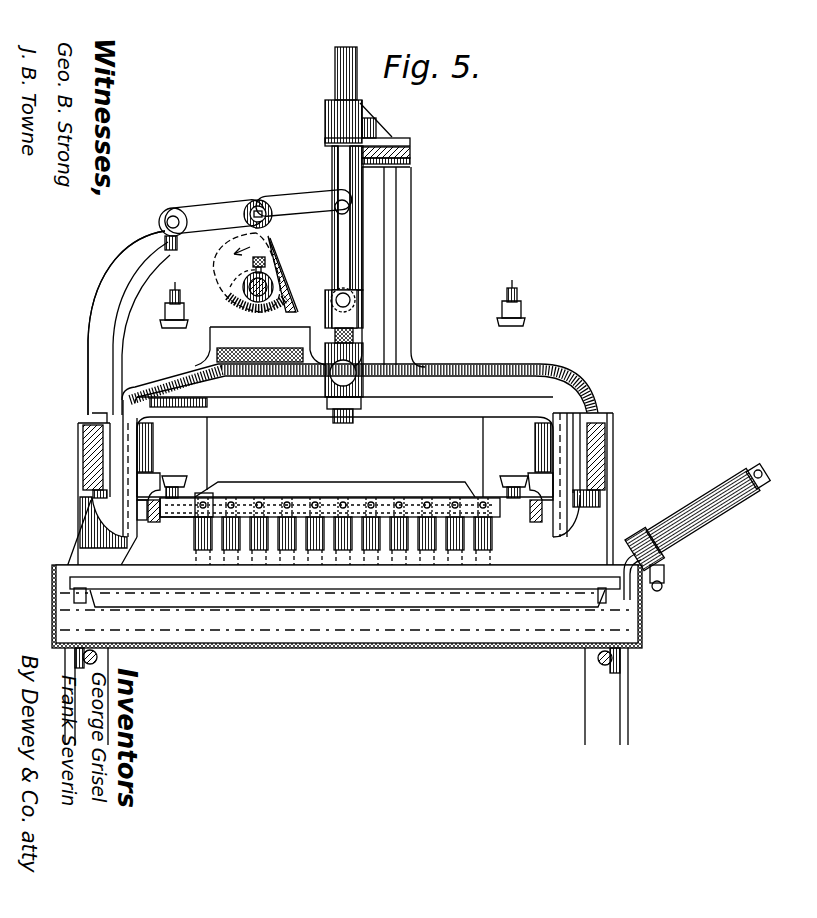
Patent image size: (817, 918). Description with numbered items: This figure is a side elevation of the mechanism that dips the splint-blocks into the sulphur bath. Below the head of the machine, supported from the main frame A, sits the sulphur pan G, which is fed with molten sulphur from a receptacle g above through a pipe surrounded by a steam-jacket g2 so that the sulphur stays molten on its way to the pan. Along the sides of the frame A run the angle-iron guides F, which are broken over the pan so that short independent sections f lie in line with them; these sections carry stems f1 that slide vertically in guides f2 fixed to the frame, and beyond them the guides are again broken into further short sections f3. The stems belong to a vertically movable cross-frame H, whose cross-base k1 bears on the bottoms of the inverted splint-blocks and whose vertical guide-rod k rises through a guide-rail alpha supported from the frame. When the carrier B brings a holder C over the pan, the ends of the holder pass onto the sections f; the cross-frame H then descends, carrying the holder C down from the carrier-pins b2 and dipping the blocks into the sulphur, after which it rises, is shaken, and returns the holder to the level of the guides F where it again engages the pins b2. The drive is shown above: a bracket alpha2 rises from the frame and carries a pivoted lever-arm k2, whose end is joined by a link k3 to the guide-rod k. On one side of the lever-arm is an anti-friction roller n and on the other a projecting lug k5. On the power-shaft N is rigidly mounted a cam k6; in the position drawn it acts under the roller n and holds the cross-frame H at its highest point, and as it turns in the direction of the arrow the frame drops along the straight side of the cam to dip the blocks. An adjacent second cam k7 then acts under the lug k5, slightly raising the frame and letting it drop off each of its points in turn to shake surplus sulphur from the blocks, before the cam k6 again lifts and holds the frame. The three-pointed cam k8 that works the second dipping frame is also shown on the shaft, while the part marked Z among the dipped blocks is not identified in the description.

The guide-rod k is at (338, 167).
The guide-rail alpha is at (410, 150).
The bracket alpha2 is at (92, 358).
The lever-arm k2 is at (222, 214).
The anti-friction roller n is at (259, 200).
The projecting lug k5 is at (286, 212).
The link k3 is at (341, 268).
The cam k6 is at (217, 262).
The second cam k7 is at (238, 294).
The cam k8 is at (276, 282).
The power-shaft N is at (284, 274).
The main frame A is at (202, 368).
The cross-frame H is at (428, 382).
The cross-base k1 is at (358, 492).
The carrier B is at (165, 308).
The carrier-pins b2 is at (175, 548).
The guides f2 is at (150, 440).
The stems f1 is at (160, 478).
The angle-iron guides F is at (154, 522).
The short sections f is at (158, 522).
The holder C is at (192, 518).
The short sections f3 is at (135, 584).
The mold plate with pins Z is at (490, 540).
The sulphur pan G is at (373, 648).
The steam-jacket g2 is at (700, 500).
The receptacle g is at (762, 470).